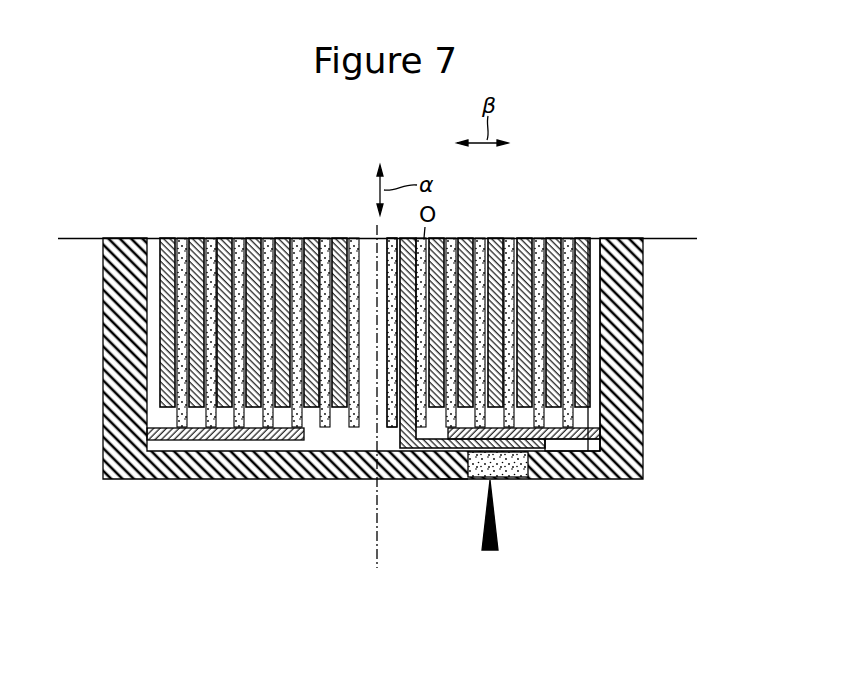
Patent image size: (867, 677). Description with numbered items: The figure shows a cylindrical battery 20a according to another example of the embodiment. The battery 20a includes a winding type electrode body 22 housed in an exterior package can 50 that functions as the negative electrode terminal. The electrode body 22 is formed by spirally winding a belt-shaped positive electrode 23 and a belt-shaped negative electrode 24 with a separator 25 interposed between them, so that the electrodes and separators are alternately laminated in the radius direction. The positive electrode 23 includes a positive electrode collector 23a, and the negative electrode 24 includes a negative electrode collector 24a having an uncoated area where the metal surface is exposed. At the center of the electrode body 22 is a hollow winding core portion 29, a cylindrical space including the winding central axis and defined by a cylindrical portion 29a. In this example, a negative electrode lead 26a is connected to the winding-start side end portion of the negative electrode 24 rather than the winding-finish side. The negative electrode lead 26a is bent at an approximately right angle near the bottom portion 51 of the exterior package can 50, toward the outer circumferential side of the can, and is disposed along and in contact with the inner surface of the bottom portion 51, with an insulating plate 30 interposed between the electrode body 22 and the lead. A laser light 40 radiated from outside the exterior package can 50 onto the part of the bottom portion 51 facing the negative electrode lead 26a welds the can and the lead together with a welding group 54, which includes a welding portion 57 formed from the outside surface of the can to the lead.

The battery 20a is at (670, 301).
The winding type electrode body 22 is at (493, 238).
The positive electrode 23 is at (553, 238).
The positive electrode collector 23a is at (548, 480).
The negative electrode 24 is at (580, 238).
The negative electrode collector 24a is at (592, 285).
The separator 25 is at (565, 238).
The negative electrode lead 26a is at (403, 442).
The hollow winding core portion 29 is at (387, 263).
The cylindrical portion 29a is at (387, 320).
The insulating plate 30 is at (597, 413).
The laser light 40 is at (490, 550).
The exterior package can 50 is at (645, 360).
The bottom portion 51 is at (167, 482).
The welding group 54 is at (510, 480).
The welding portion 57 is at (457, 480).